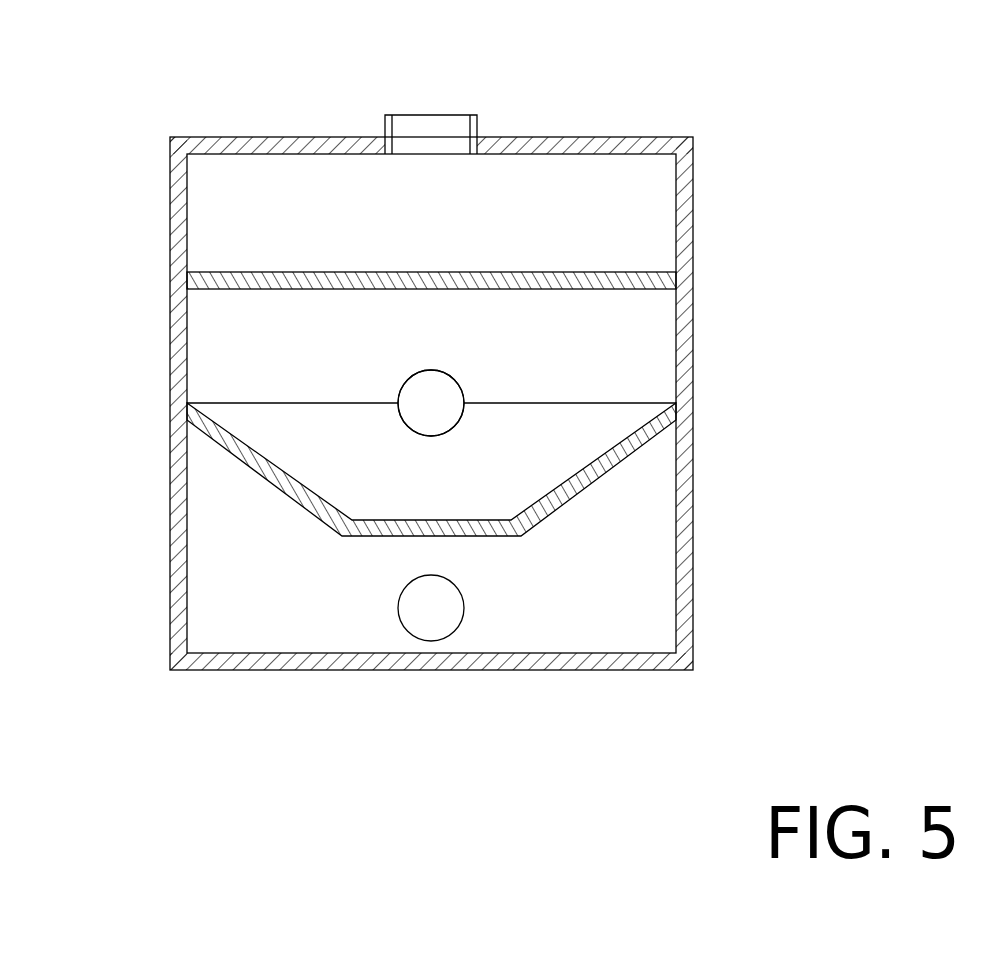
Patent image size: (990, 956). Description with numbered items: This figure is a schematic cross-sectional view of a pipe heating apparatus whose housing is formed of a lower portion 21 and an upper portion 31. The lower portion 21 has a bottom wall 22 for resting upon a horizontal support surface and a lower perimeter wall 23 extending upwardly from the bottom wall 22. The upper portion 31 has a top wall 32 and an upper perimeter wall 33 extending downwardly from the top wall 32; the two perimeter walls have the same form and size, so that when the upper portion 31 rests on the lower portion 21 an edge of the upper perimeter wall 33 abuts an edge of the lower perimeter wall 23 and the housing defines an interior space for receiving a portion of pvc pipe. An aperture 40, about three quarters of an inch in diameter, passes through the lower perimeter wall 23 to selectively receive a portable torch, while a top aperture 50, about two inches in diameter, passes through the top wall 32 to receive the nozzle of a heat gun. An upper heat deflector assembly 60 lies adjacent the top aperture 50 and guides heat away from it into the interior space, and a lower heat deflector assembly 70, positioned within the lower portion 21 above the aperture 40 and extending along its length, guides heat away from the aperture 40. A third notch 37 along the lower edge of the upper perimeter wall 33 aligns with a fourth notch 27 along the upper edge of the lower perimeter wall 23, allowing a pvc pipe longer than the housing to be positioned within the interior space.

The lower portion 21 is at (170, 670).
The bottom wall 22 is at (460, 672).
The lower perimeter wall 23 is at (693, 582).
The upper portion 31 is at (170, 137).
The top wall 32 is at (627, 137).
The upper perimeter wall 33 is at (693, 173).
The top aperture 50 is at (485, 130).
The upper heat deflector assembly 60 is at (645, 283).
The lower heat deflector assembly 70 is at (617, 462).
The third notch 37 is at (400, 387).
The fourth notch 27 is at (405, 427).
The aperture 40 is at (398, 615).